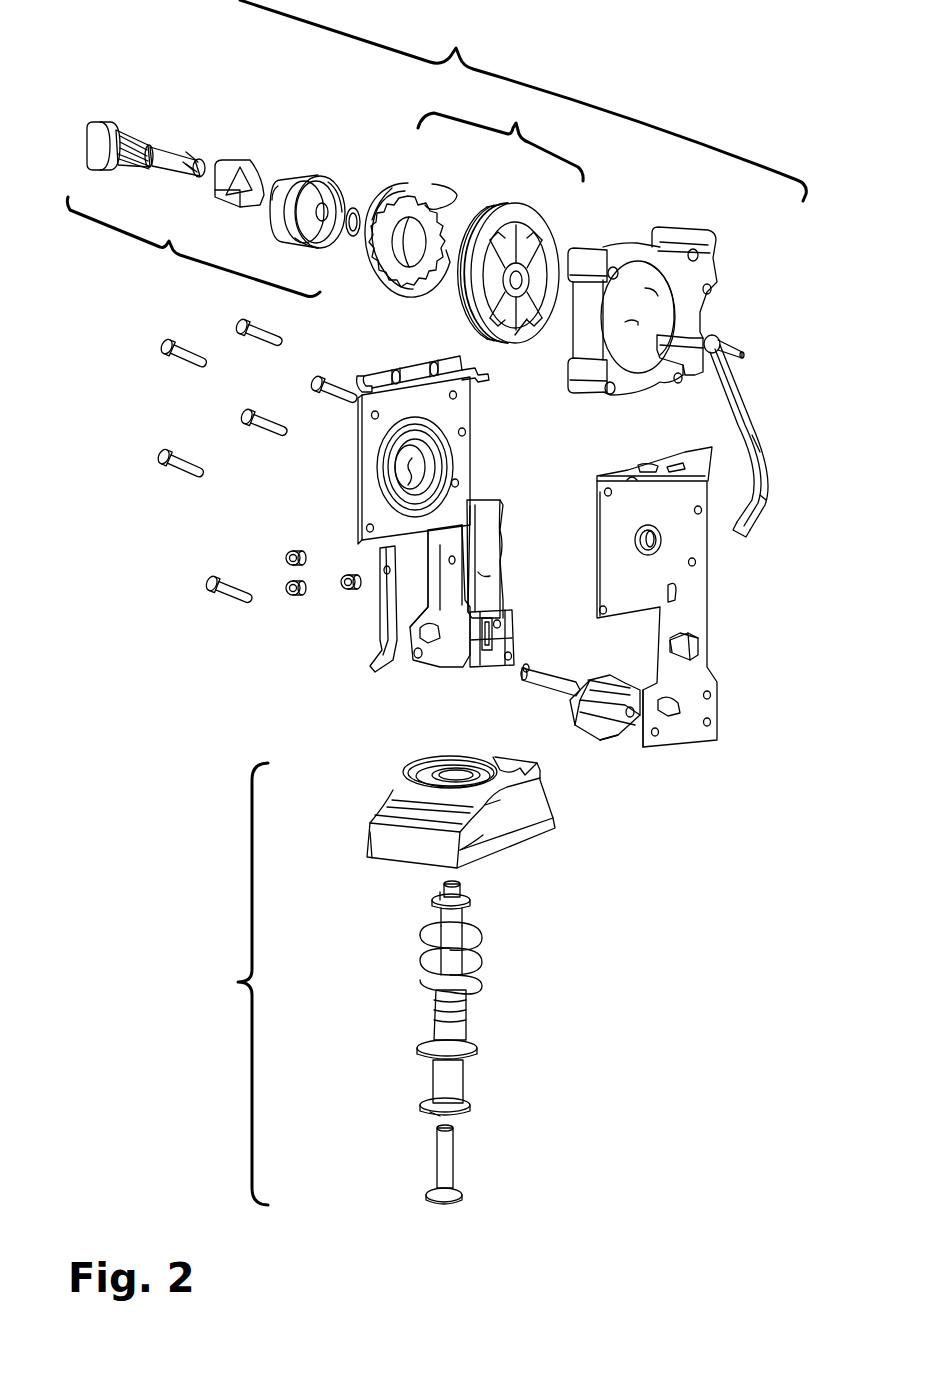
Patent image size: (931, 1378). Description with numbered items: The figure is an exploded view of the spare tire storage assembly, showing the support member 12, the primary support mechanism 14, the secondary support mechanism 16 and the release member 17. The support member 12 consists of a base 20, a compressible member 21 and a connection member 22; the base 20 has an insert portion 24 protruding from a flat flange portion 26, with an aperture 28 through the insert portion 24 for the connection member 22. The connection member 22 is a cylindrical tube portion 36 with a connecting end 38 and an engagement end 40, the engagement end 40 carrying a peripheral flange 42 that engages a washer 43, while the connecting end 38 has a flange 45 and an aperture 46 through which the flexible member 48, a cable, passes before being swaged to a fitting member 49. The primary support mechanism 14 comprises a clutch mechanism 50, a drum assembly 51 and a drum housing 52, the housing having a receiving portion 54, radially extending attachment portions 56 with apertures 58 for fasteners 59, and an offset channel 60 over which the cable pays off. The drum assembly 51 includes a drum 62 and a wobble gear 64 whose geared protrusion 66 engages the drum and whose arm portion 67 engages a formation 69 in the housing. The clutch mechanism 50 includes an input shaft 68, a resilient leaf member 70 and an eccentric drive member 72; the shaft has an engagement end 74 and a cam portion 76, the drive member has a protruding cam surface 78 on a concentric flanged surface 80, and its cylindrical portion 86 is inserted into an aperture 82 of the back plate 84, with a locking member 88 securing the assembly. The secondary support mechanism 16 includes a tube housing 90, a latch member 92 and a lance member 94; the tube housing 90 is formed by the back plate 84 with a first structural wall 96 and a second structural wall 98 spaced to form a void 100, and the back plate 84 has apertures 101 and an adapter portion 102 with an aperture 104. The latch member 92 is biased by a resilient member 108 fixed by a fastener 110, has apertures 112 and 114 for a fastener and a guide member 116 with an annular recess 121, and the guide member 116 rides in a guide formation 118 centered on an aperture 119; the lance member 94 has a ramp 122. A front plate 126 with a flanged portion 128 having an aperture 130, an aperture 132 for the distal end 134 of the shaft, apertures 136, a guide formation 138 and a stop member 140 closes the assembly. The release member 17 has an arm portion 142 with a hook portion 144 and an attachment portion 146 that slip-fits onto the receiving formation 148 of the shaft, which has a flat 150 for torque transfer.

The support member 12 is at (230, 984).
The primary support mechanism 14 is at (523, 100).
The secondary support mechanism 16 is at (510, 493).
The release member 17 is at (755, 404).
The base 20 is at (398, 769).
The compressible member 21 is at (484, 949).
The connection member 22 is at (426, 1081).
The insert portion 24 is at (470, 793).
The flat flange portion 26 is at (395, 812).
The aperture 28 is at (455, 775).
The cylindrical tube portion 36 is at (458, 1038).
The connecting end 38 is at (463, 893).
The engagement end 40 is at (432, 1116).
The peripheral flange 42 is at (425, 1105).
The washer 43 is at (478, 1051).
The flange 45 is at (470, 901).
The aperture 46 is at (440, 882).
The flexible member 48 is at (513, 215).
The fitting member 49 is at (456, 1159).
The clutch mechanism 50 is at (193, 247).
The drum assembly 51 is at (500, 140).
The drum housing 52 is at (636, 240).
The receiving portion 54 is at (635, 325).
The attachment portions 56 is at (589, 258).
The aperture 58 is at (613, 268).
The fastener 59 is at (243, 412).
The channel 60 is at (682, 362).
The drum 62 is at (519, 336).
The wobble gear 64 is at (447, 182).
The geared protrusion 66 is at (410, 276).
The arm portion 67 is at (432, 196).
The input shaft 68 is at (165, 145).
The formation 69 is at (642, 298).
The resilient leaf member 70 is at (235, 203).
The eccentric drive member 72 is at (306, 185).
The engagement end 74 is at (97, 125).
The cam portion 76 is at (140, 137).
The protruding cam surface 78 is at (331, 199).
The concentric flanged surface 80 is at (320, 236).
The aperture 82 is at (410, 465).
The back plate 84 is at (360, 477).
The cylindrical portion 86 is at (288, 180).
The locking member 88 is at (358, 212).
The tube housing 90 is at (508, 549).
The latch member 92 is at (595, 734).
The lance member 94 is at (517, 627).
The first structural wall 96 is at (445, 596).
The second structural wall 98 is at (484, 536).
The void 100 is at (482, 576).
The apertures 101 is at (466, 432).
The adapter portion 102 is at (369, 373).
The aperture 104 is at (440, 364).
The resilient member 108 is at (378, 641).
The fastener 110 is at (342, 586).
The aperture 112 is at (618, 738).
The aperture 114 is at (641, 682).
The guide member 116 is at (558, 686).
The guide formation 118 is at (430, 642).
The aperture 119 is at (410, 659).
The annular recess 121 is at (522, 673).
The ramp 122 is at (480, 653).
The front plate 126 is at (708, 606).
The flanged portion 128 is at (690, 460).
The aperture 130 is at (663, 444).
The aperture 132 is at (660, 541).
The distal end 134 is at (200, 176).
The apertures 136 is at (600, 480).
The guide formation 138 is at (675, 713).
The stop member 140 is at (701, 648).
The arm portion 142 is at (772, 442).
The hook portion 144 is at (775, 499).
The attachment portion 146 is at (738, 350).
The receiving formation 148 is at (178, 170).
The flat 150 is at (185, 170).